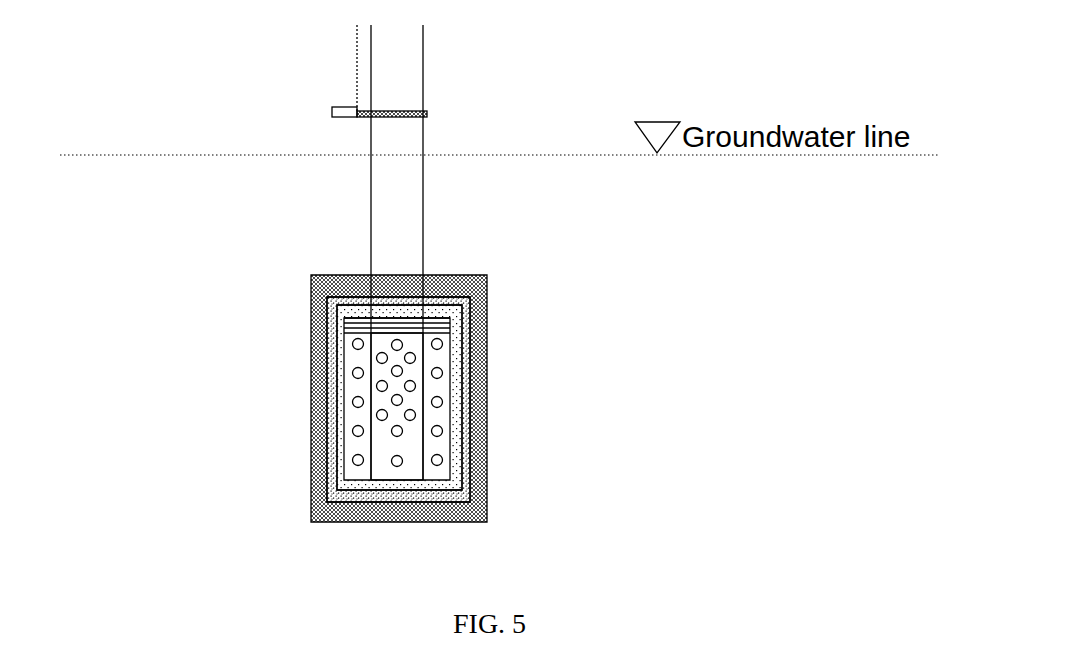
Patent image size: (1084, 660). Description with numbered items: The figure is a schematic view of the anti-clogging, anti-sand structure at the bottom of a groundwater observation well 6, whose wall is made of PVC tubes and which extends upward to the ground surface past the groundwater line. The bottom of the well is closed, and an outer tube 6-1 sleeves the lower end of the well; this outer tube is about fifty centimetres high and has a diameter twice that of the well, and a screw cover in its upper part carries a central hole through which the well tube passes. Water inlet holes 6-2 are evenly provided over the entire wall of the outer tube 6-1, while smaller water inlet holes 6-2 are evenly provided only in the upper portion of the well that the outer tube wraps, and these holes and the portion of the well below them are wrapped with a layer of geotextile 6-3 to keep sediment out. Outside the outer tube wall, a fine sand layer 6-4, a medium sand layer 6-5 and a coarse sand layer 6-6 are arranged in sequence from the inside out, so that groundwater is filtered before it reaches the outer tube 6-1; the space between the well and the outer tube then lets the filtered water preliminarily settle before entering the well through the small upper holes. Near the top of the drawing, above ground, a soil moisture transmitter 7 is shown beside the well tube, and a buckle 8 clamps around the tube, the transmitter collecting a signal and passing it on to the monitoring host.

The groundwater observation well 6 is at (423, 225).
The soil moisture transmitter 7 is at (332, 107).
The buckle 8 is at (427, 110).
The outer tube 6-1 is at (428, 320).
The water inlet hole 6-2 is at (438, 362).
The geotextile 6-3 is at (423, 417).
The fine sand layer 6-4 is at (325, 308).
The medium sand layer 6-5 is at (325, 418).
The coarse sand layer 6-6 is at (313, 497).